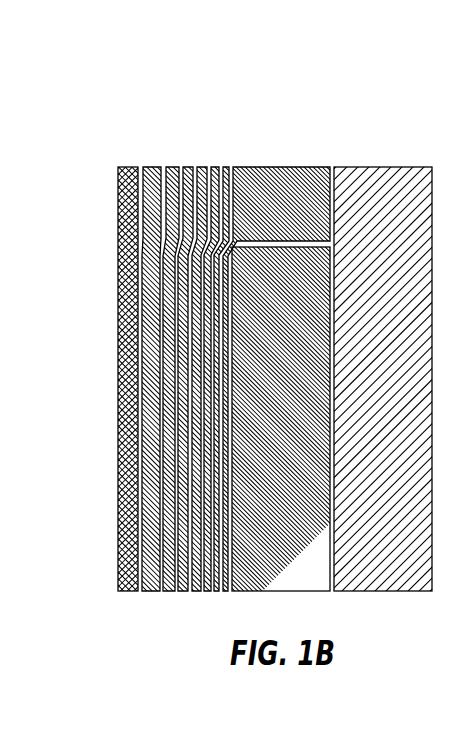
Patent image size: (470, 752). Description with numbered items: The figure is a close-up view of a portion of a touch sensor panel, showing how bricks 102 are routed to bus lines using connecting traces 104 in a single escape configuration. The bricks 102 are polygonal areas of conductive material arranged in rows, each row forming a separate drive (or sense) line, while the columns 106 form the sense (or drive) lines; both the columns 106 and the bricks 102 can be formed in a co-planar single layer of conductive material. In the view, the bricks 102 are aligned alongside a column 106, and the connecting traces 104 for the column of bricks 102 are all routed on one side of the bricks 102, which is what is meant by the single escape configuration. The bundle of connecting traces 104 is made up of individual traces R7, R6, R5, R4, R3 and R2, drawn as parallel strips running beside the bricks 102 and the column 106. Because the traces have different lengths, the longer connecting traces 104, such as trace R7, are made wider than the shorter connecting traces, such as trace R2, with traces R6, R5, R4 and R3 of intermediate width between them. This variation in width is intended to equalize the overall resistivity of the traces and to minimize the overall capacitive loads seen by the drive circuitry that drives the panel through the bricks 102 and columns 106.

The connecting traces 104 is at (297, 116).
The trace R7 is at (152, 167).
The trace R6 is at (172, 167).
The trace R5 is at (188, 167).
The trace R4 is at (201, 167).
The trace R3 is at (214, 167).
The trace R2 is at (227, 167).
The bricks 102 is at (284, 167).
The columns 106 is at (387, 167).